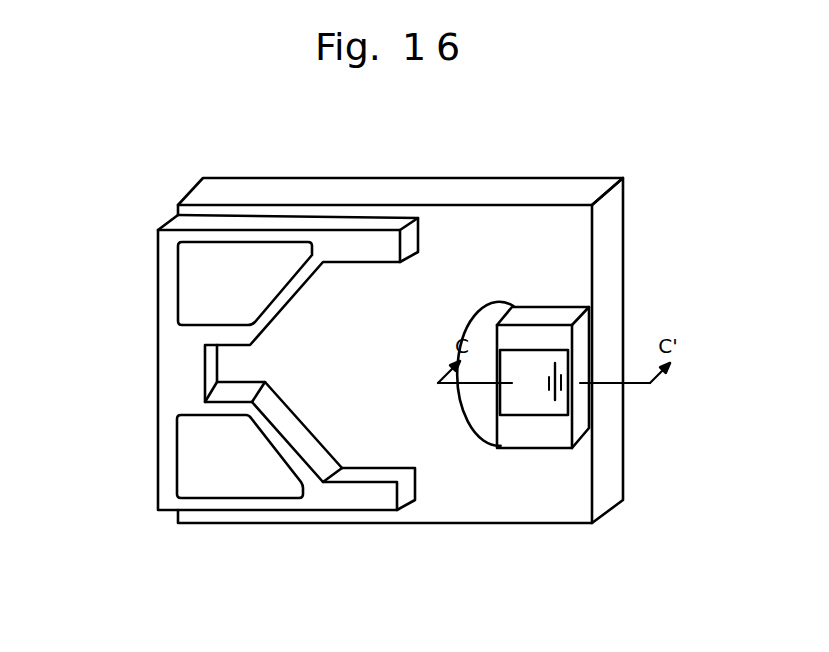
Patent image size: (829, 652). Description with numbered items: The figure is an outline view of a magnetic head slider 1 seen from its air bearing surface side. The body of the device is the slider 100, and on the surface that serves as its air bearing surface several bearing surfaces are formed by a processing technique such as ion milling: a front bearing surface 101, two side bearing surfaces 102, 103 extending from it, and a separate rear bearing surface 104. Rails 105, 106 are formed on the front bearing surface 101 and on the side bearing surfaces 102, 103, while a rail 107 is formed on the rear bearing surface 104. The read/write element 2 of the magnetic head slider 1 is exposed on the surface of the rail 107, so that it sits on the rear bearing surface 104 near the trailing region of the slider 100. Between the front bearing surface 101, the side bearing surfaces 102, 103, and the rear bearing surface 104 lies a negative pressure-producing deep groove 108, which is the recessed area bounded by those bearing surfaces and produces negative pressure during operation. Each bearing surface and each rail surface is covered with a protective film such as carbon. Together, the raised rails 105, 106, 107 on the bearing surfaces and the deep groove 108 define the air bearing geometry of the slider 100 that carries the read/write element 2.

The magnetic head slider 1 is at (587, 160).
The read/write element 2 is at (555, 405).
The slider 100 is at (487, 193).
The front bearing surface 101 is at (172, 368).
The side bearing surface 102 is at (362, 246).
The side bearing surface 103 is at (352, 497).
The rear bearing surface 104 is at (500, 430).
The rail 105 is at (224, 262).
The rail 106 is at (225, 485).
The rail 107 is at (530, 407).
The negative pressure-producing deep groove 108 is at (530, 263).